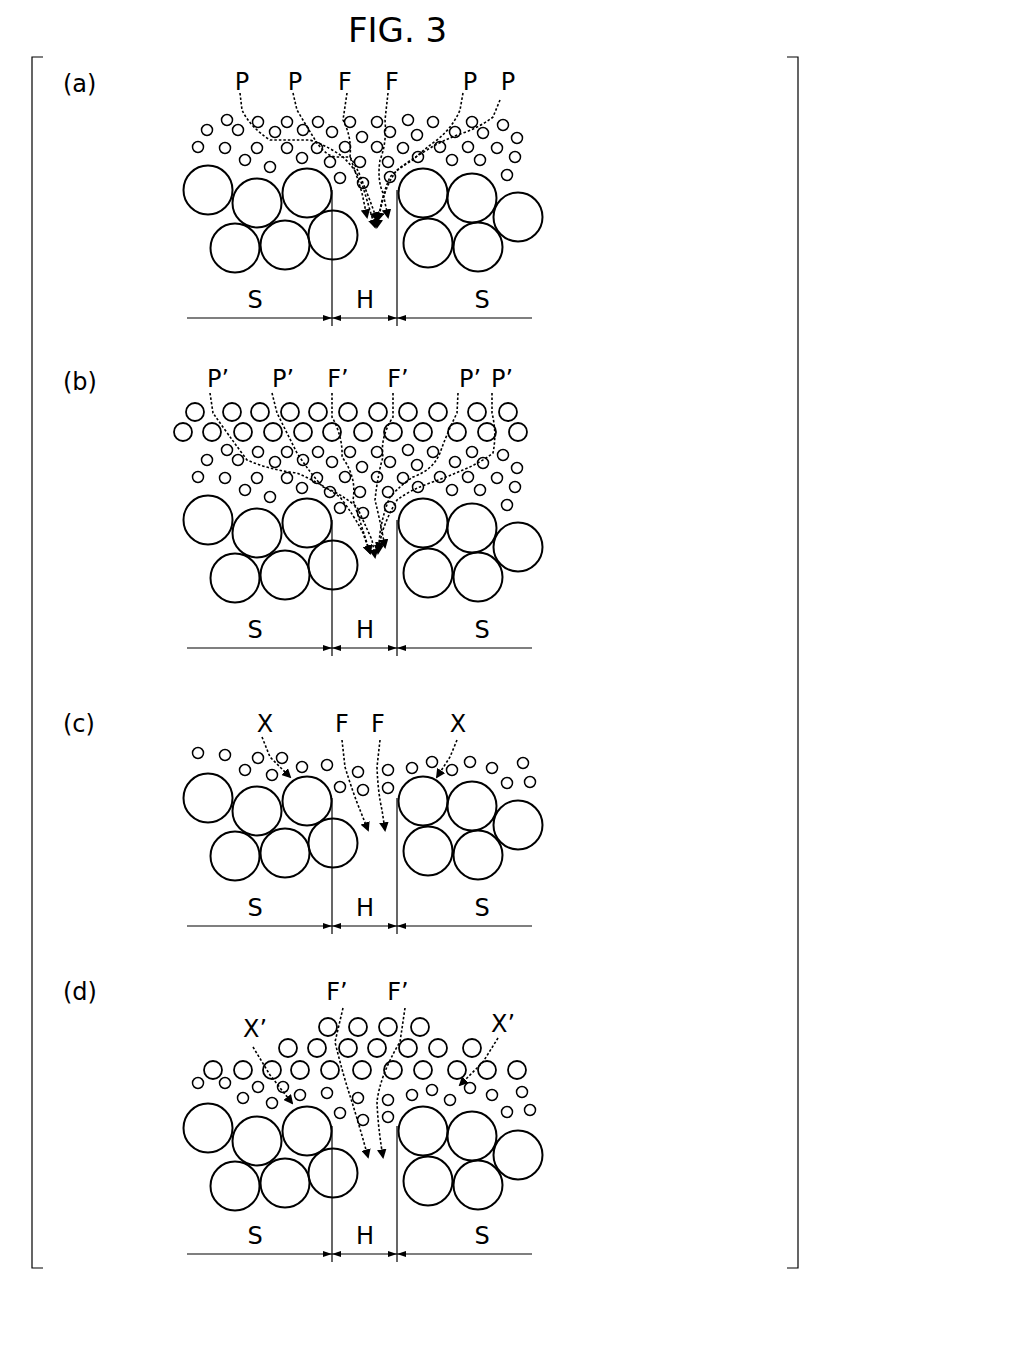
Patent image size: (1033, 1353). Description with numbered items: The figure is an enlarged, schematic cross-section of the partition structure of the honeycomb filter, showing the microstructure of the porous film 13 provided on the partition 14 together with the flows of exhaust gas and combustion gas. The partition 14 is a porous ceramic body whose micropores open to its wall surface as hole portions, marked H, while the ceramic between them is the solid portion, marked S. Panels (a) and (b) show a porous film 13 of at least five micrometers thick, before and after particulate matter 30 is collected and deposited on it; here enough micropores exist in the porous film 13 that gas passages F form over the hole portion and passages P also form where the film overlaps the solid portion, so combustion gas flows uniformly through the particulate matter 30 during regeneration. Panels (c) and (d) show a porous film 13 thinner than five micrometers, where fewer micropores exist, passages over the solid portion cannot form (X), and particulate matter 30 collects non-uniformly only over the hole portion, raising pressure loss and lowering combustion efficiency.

The porous film 13 is at (562, 123).
The partition 14 is at (562, 182).
The particulate matter 30 is at (562, 1080).